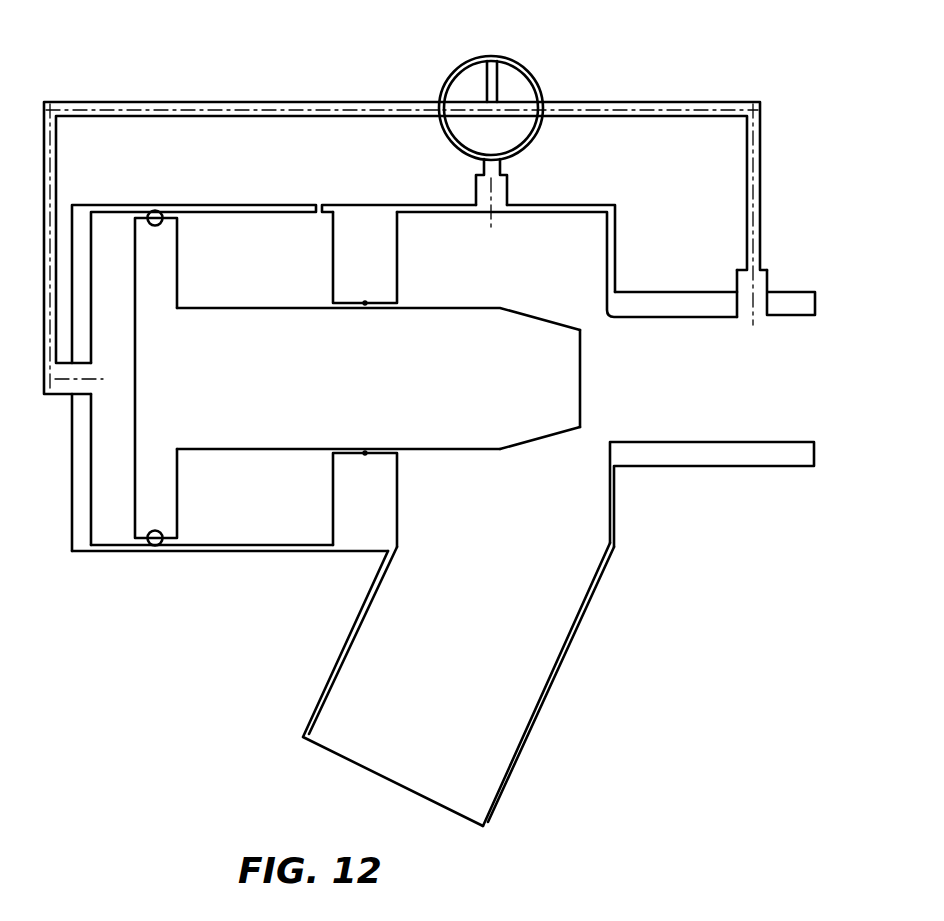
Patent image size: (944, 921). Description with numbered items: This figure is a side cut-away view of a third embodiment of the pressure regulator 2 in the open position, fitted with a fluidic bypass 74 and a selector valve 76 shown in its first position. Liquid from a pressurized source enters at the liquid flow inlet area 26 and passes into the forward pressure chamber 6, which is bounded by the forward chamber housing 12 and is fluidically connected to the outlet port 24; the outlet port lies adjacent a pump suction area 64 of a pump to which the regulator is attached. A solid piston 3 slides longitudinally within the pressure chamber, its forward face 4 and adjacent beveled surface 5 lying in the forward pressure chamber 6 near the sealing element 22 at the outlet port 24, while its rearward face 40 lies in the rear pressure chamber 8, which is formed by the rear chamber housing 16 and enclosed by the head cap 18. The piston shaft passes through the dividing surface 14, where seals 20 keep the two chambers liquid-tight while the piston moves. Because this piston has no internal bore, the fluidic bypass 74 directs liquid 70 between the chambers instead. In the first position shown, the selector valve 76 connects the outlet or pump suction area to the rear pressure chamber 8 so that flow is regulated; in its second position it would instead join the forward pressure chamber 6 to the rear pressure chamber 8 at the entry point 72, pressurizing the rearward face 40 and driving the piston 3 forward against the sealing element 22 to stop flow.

The pressure regulator 2 is at (722, 503).
The piston 3 is at (381, 403).
The forward face 4 is at (583, 376).
The beveled surface 5 is at (503, 451).
The forward pressure chamber 6 is at (510, 240).
The rear pressure chamber 8 is at (105, 470).
The forward chamber housing 12 is at (548, 695).
The dividing surface 14 is at (365, 499).
The rear chamber housing 16 is at (180, 545).
The head cap 18 is at (83, 518).
The seals 20 is at (365, 303).
The sealing element 22 is at (612, 442).
The outlet port 24 is at (657, 370).
The liquid flow inlet area 26 is at (458, 684).
The rearward face 40 is at (178, 487).
The pump suction area 64 is at (688, 341).
The liquid 70 is at (375, 101).
The entry point 72 is at (499, 192).
The fluidic bypass 74 is at (764, 260).
The selector valve 76 is at (522, 67).